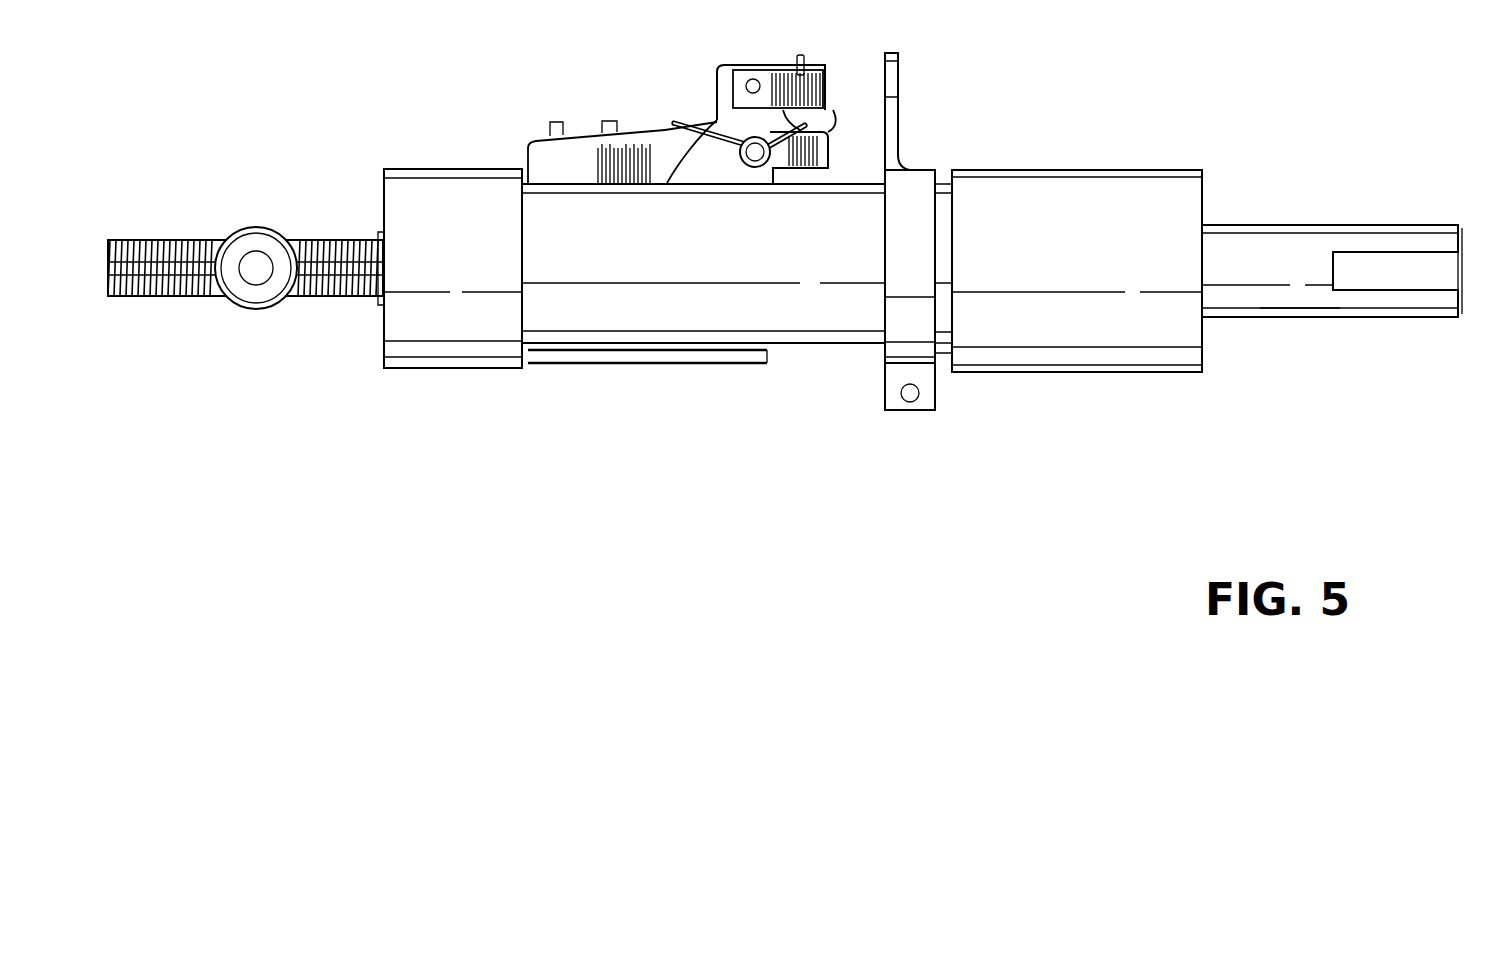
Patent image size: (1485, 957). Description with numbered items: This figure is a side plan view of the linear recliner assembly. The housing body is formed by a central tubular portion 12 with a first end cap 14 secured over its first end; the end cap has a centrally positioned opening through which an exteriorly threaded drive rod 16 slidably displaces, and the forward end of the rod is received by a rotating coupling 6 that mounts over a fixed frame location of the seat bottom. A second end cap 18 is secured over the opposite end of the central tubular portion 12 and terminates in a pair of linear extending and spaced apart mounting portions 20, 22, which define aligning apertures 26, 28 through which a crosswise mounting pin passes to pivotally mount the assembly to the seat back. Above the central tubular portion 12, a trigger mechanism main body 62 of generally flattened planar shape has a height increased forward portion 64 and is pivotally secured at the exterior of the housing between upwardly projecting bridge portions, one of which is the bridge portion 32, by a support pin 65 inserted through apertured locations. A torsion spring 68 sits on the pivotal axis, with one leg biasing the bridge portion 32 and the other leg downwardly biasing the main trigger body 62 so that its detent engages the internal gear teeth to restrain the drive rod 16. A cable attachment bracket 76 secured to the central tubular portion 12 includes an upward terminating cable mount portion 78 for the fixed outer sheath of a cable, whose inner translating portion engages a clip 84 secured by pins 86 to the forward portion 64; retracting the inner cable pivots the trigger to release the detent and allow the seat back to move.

The rotating coupling 6 is at (258, 238).
The central tubular portion 12 is at (714, 318).
The first end cap 14 is at (431, 353).
The drive rod 16 is at (145, 300).
The second end cap 18 is at (1052, 190).
The mounting portion 20 is at (1328, 225).
The mounting portion 22 is at (1295, 320).
The aperture 26 is at (1405, 225).
The aperture 28 is at (1405, 320).
The bridge portion 32 is at (820, 130).
The main body 62 is at (592, 140).
The forward portion 64 is at (717, 78).
The support pin 65 is at (756, 167).
The torsion spring 68 is at (740, 157).
The cable attachment bracket 76 is at (925, 318).
The cable mount portion 78 is at (900, 75).
The clip 84 is at (795, 62).
The pin 86 is at (753, 86).